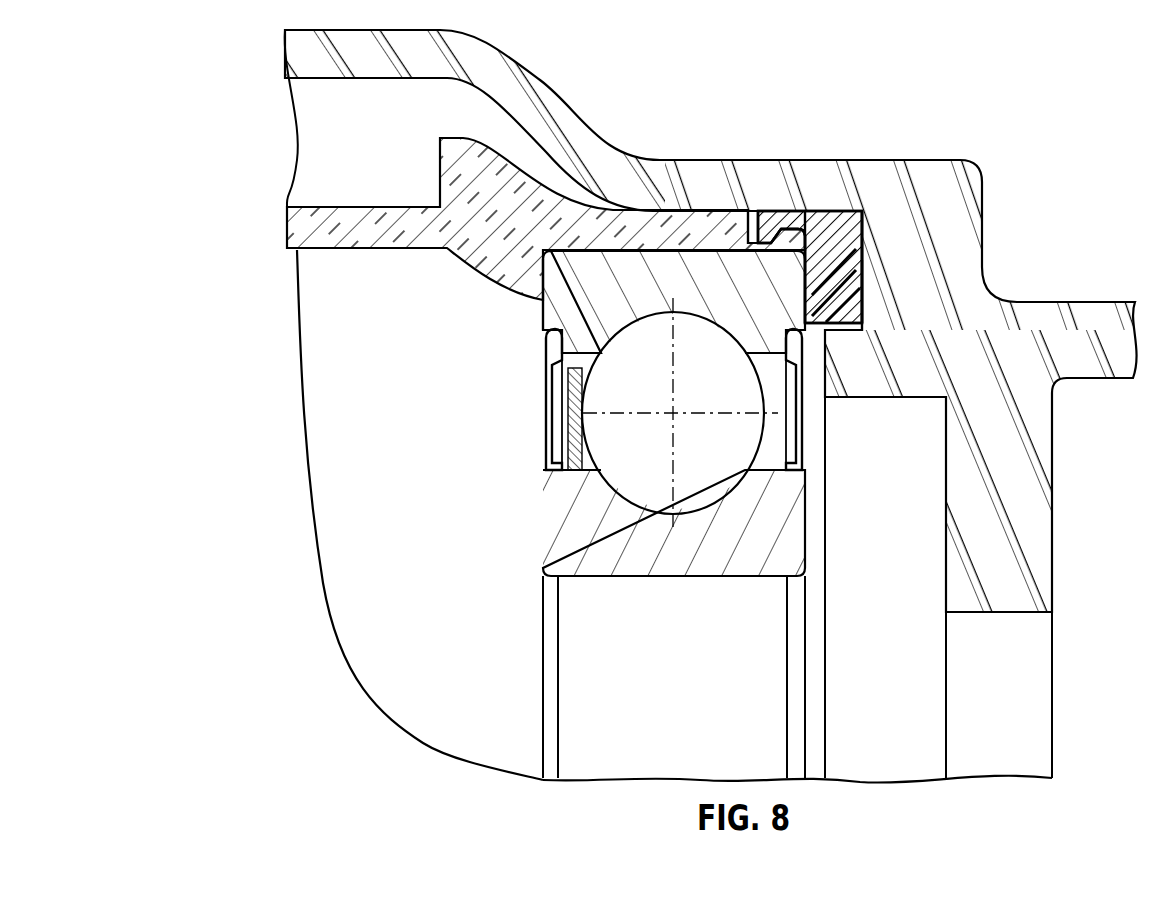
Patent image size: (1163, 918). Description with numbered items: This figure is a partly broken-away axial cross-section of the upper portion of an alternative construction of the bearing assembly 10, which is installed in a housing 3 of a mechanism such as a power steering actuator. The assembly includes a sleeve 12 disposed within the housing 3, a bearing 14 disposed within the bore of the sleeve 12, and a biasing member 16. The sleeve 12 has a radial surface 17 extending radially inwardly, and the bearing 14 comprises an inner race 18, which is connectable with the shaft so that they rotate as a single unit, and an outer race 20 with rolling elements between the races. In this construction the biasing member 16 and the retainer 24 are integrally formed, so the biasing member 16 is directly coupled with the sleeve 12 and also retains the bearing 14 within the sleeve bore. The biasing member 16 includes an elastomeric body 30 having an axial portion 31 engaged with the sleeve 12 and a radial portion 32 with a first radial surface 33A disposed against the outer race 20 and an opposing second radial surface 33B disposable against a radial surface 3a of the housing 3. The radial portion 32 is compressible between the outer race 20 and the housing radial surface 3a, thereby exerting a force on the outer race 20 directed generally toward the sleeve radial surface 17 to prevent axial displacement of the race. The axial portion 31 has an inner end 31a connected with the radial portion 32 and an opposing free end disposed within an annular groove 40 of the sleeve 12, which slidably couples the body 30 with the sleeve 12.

The housing 3 is at (879, 100).
The radial surface of the housing 3a is at (867, 276).
The bearing assembly 10 is at (353, 397).
The sleeve 12 is at (323, 177).
The bearing 14 is at (483, 466).
The biasing member 16 is at (866, 268).
The radial surface of the sleeve 17 is at (557, 275).
The inner race 18 is at (558, 525).
The outer race 20 is at (540, 300).
The retainer 24 is at (793, 210).
The elastomeric body 30 is at (860, 243).
The axial portion 31 is at (803, 213).
The inner end of the axial portion 31a is at (768, 218).
The radial portion 32 is at (845, 307).
The first radial surface 33A is at (807, 278).
The second radial surface 33B is at (867, 256).
The annular groove 40 is at (753, 208).